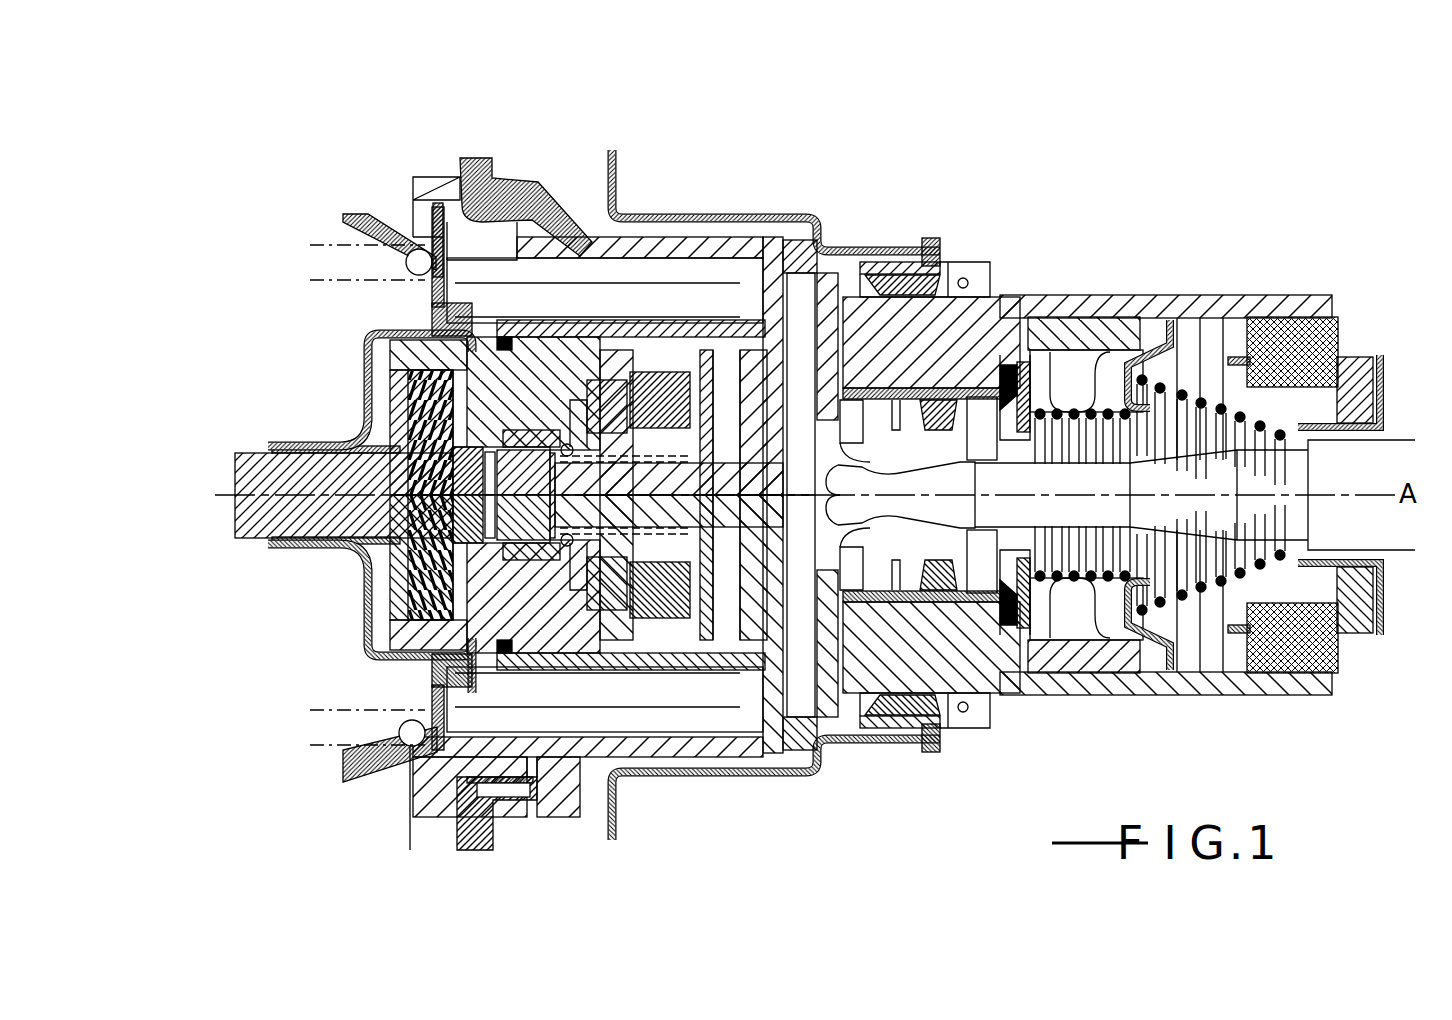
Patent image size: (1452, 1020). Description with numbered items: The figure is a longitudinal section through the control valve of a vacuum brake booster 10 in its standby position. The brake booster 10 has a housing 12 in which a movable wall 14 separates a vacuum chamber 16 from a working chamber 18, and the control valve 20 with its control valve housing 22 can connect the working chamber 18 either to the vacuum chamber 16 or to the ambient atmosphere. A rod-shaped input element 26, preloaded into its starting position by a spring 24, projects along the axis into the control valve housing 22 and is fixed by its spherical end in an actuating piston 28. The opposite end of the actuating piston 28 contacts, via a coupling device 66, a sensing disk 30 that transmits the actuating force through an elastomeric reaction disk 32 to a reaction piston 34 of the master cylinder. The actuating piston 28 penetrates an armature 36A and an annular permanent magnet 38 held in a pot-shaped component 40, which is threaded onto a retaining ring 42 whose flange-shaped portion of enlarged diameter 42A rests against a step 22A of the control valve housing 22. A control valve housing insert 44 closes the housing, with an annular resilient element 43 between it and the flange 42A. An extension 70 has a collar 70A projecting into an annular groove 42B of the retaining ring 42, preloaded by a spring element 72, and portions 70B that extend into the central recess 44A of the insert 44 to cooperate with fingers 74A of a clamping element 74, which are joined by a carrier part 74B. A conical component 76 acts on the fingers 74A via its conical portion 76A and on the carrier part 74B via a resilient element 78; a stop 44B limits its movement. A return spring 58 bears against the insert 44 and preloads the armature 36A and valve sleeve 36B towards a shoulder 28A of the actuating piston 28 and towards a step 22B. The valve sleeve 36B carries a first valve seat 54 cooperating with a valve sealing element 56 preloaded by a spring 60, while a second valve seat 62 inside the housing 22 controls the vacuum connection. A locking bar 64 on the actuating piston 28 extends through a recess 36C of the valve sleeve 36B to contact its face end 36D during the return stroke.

The vacuum brake booster 10 is at (975, 113).
The housing 12 is at (610, 166).
The movable wall 14 is at (468, 158).
The vacuum chamber 16 is at (405, 153).
The working chamber 18 is at (505, 173).
The control valve 20 is at (1222, 222).
The control valve housing 22 is at (1262, 300).
The step of the control valve housing 22A is at (634, 450).
The step of the control valve housing 22B is at (815, 752).
The spring 24 is at (1355, 358).
The input element 26 is at (1342, 480).
The actuating piston 28 is at (946, 302).
The shoulder of the actuating piston 28A is at (920, 250).
The sensing disk 30 is at (362, 420).
The reaction disk 32 is at (395, 470).
The reaction piston 34 is at (300, 448).
The armature 36A is at (820, 263).
The valve sleeve 36B is at (985, 342).
The recess of the valve sleeve 36C is at (867, 735).
The face end of the valve sleeve 36D is at (920, 735).
The permanent magnet 38 is at (670, 293).
The pot-shaped component 40 is at (778, 262).
The retaining ring 42 is at (650, 385).
The flange-shaped portion of enlarged diameter 42A is at (625, 560).
The annular groove 42B is at (690, 575).
The annular resilient element 43 is at (593, 560).
The control valve housing insert 44 is at (480, 385).
The central recess 44A is at (425, 336).
The stop 44B is at (575, 556).
The first annular valve seat 54 is at (978, 600).
The valve sealing element 56 is at (1030, 645).
The return spring 58 is at (884, 252).
The spring 60 is at (1085, 630).
The second annular valve seat 62 is at (984, 368).
The locking bar 64 is at (768, 372).
The coupling device 66 is at (405, 727).
The extension 70 is at (400, 255).
The collar 70A is at (725, 652).
The portions in the form of cylinder envelope segments 70B is at (427, 327).
The spring element 72 is at (745, 782).
The clamping element 74 is at (415, 625).
The fingers 74A is at (395, 662).
The carrier part 74B is at (367, 560).
The conical component 76 is at (265, 505).
The conical portion 76A is at (508, 598).
The resilient element 78 is at (367, 606).